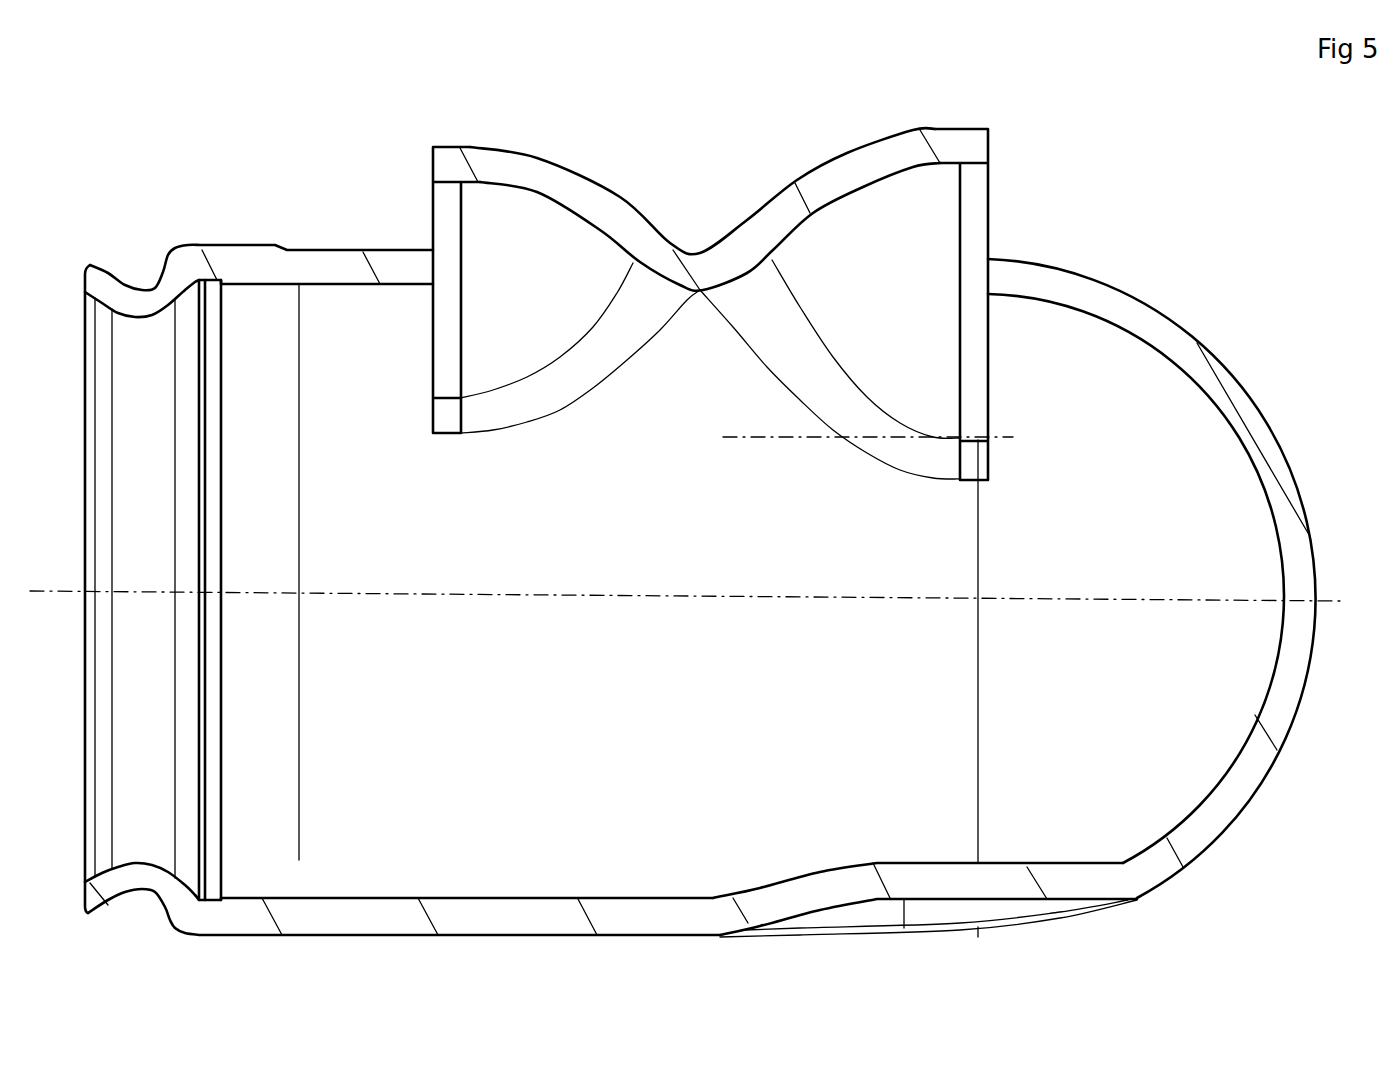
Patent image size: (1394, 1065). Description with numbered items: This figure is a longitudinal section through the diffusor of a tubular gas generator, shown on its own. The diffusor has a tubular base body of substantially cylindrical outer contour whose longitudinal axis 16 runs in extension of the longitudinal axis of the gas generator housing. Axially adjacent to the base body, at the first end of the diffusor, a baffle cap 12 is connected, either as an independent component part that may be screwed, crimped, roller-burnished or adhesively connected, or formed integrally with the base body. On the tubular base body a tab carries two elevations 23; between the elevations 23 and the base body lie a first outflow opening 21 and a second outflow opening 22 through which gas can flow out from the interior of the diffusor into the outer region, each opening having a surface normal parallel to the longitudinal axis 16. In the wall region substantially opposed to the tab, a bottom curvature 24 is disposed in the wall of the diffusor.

The baffle cap 12 is at (1253, 410).
The longitudinal axis 16 is at (1092, 598).
The first outflow opening 21 is at (1007, 218).
The second outflow opening 22 is at (410, 203).
The elevations 23 is at (545, 155).
The bottom curvature 24 is at (1062, 902).